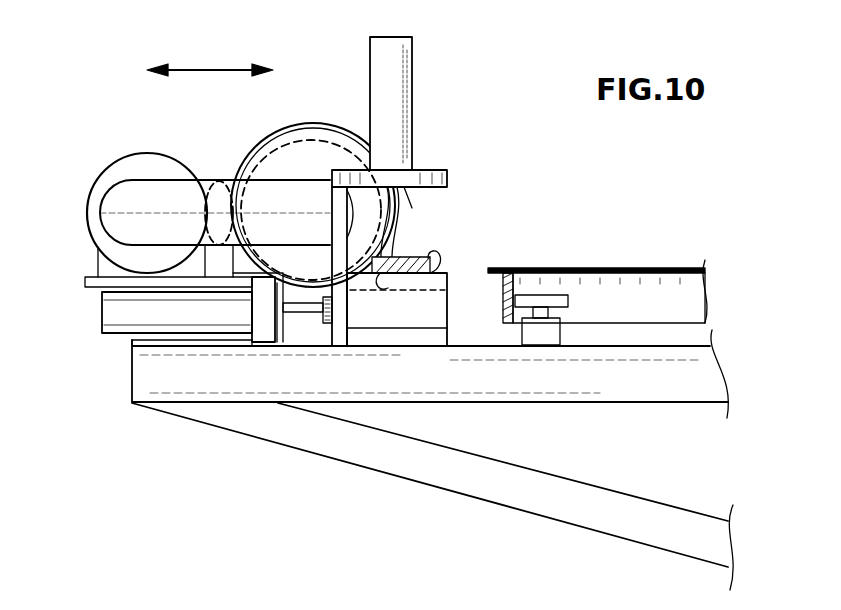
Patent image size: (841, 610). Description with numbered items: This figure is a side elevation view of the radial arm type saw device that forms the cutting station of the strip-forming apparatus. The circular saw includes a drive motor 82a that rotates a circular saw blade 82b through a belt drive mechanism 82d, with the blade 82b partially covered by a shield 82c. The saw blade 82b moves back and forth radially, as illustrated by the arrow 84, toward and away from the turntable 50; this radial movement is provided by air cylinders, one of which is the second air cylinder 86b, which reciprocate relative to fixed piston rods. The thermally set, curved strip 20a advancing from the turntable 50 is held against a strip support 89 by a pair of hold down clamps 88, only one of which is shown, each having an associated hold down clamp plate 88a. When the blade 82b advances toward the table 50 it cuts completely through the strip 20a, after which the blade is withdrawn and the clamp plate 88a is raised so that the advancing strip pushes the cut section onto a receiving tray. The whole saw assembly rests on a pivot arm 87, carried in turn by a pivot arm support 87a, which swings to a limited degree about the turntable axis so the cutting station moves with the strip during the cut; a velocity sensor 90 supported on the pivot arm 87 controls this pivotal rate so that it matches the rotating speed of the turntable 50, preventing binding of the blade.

The radial travel arrow 84 is at (230, 68).
The hold down clamps 88 is at (406, 34).
The hold down clamp plates 88a is at (416, 252).
The drive motor 82a is at (110, 165).
The circular saw blade 82b is at (300, 290).
The shield 82c is at (322, 122).
The belt drive mechanism 82d is at (226, 178).
The second air cylinder 86b is at (116, 346).
The curved strip 20a is at (452, 247).
The strip support 89 is at (447, 280).
The turntable 50 is at (655, 250).
The velocity sensor 90 is at (580, 300).
The pivot arm 87 is at (526, 398).
The pivot arm support 87a is at (466, 497).